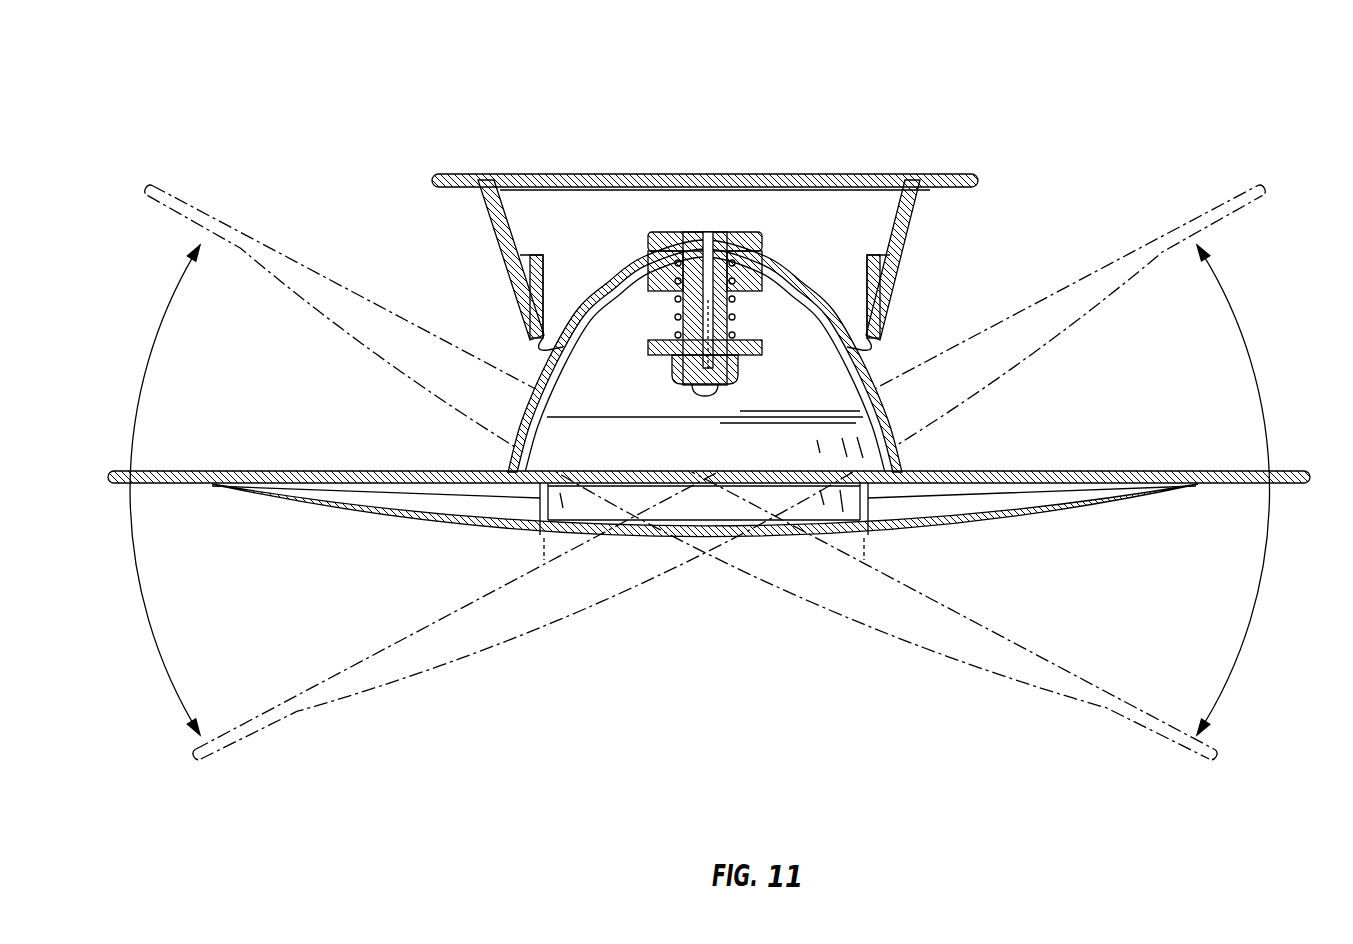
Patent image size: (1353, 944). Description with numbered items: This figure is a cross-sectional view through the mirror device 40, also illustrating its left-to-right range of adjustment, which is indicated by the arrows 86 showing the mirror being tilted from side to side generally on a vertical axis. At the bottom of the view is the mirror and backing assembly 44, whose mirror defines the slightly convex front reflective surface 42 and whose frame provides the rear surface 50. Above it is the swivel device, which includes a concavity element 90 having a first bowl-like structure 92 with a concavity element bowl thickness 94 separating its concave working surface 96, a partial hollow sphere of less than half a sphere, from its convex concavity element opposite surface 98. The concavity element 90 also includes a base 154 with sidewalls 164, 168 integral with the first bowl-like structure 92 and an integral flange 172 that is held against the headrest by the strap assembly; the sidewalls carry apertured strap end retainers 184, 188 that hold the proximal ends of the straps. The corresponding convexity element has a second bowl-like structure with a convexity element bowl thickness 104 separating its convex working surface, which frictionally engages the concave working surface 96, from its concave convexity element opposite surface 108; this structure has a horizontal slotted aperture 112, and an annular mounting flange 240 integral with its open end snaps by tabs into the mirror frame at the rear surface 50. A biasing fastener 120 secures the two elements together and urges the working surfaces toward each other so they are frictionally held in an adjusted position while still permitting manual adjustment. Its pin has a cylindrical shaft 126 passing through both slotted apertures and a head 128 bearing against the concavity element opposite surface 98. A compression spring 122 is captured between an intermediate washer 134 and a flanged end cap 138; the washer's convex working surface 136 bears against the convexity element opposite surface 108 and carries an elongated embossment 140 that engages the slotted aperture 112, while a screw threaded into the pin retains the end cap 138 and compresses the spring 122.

The mirror device 40 is at (1118, 126).
The front reflective surface 42 is at (1047, 522).
The mirror and backing assembly 44 is at (1310, 463).
The rear surface 50 is at (1020, 472).
The arrows 86 is at (152, 632).
The concavity element 90 is at (388, 170).
The first bowl-like structure 92 is at (590, 277).
The concavity element bowl thickness 94 is at (708, 232).
The concave working surface 96 is at (585, 310).
The concavity element opposite surface 98 is at (800, 292).
The convexity element bowl thickness 104 is at (780, 277).
The convexity element opposite surface 108 is at (853, 367).
The slotted aperture 112 is at (628, 262).
The biasing fastener 120 is at (963, 275).
The spring 122 is at (683, 297).
The cylindrical shaft 126 is at (782, 278).
The head 128 is at (668, 240).
The intermediate washer 134 is at (628, 287).
The convex working surface 136 is at (793, 282).
The flanged end cap 138 is at (668, 362).
The elongated embossment 140 is at (733, 257).
The base 154 is at (958, 203).
The sidewall 164 is at (497, 227).
The sidewall 168 is at (912, 241).
The flange 172 is at (455, 184).
The apertured strap end retainer 184 is at (524, 272).
The apertured strap end retainer 188 is at (883, 290).
The annular mounting flange 240 is at (503, 448).